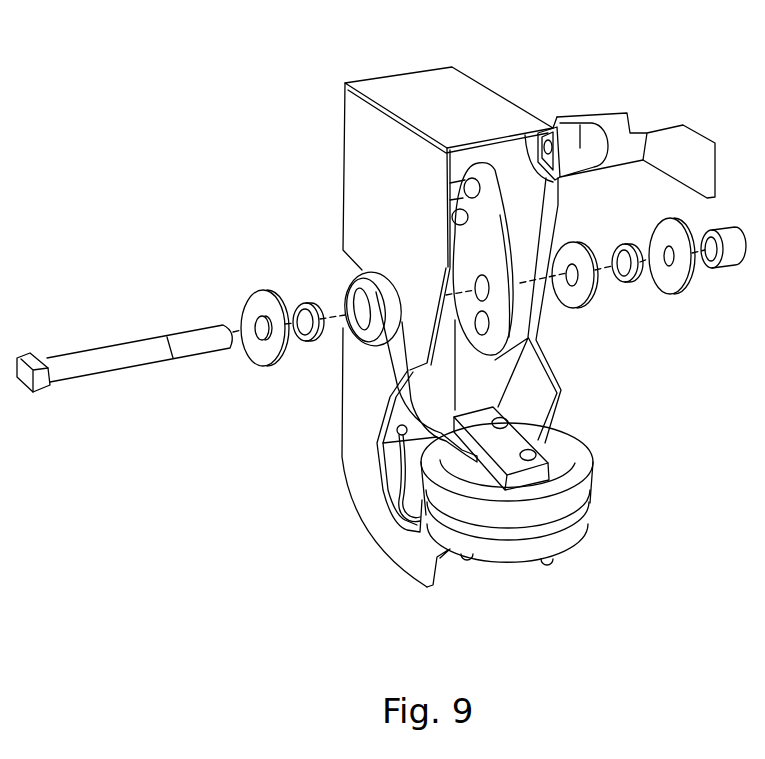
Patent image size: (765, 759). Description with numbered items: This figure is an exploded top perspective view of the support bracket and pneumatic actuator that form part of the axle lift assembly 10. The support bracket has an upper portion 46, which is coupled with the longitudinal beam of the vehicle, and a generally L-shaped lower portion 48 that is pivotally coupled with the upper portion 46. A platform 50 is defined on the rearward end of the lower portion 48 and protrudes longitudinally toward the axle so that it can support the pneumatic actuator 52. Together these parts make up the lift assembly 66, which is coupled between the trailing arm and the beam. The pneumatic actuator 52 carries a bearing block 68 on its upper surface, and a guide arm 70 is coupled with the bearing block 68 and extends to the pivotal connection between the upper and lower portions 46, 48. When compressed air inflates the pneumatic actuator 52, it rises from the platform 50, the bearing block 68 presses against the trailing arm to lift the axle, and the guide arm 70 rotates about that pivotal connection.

The axle lift assembly 10 is at (241, 96).
The upper portion 46 is at (368, 178).
The lower portion 48 is at (360, 423).
The platform 50 is at (453, 548).
The pneumatic actuator 52 is at (563, 537).
The lift assembly 66 is at (303, 500).
The bearing block 68 is at (533, 475).
The guide arm 70 is at (550, 410).